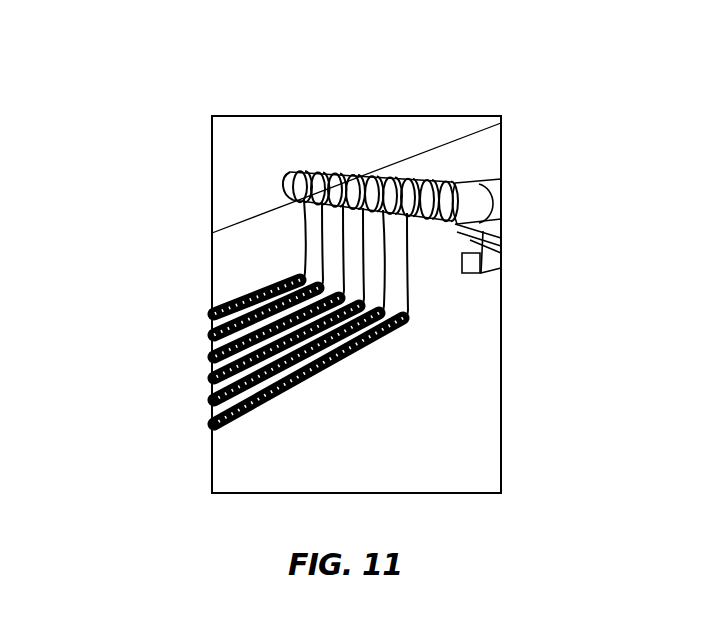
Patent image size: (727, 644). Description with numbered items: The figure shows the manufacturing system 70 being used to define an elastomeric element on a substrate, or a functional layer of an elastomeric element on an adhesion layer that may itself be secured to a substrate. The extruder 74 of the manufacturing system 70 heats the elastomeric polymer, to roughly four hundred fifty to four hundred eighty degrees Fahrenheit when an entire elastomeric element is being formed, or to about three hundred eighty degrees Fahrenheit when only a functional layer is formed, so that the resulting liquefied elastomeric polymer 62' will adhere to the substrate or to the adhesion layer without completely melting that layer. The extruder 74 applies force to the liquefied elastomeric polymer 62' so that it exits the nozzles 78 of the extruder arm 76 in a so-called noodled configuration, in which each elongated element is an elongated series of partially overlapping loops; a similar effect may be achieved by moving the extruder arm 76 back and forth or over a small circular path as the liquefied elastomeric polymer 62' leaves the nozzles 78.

The manufacturing system 70 is at (514, 137).
The extruder arm 76 is at (344, 172).
The extruder 74 is at (494, 208).
The liquefied elastomeric polymer 62' is at (238, 249).
The nozzles 78 is at (363, 215).